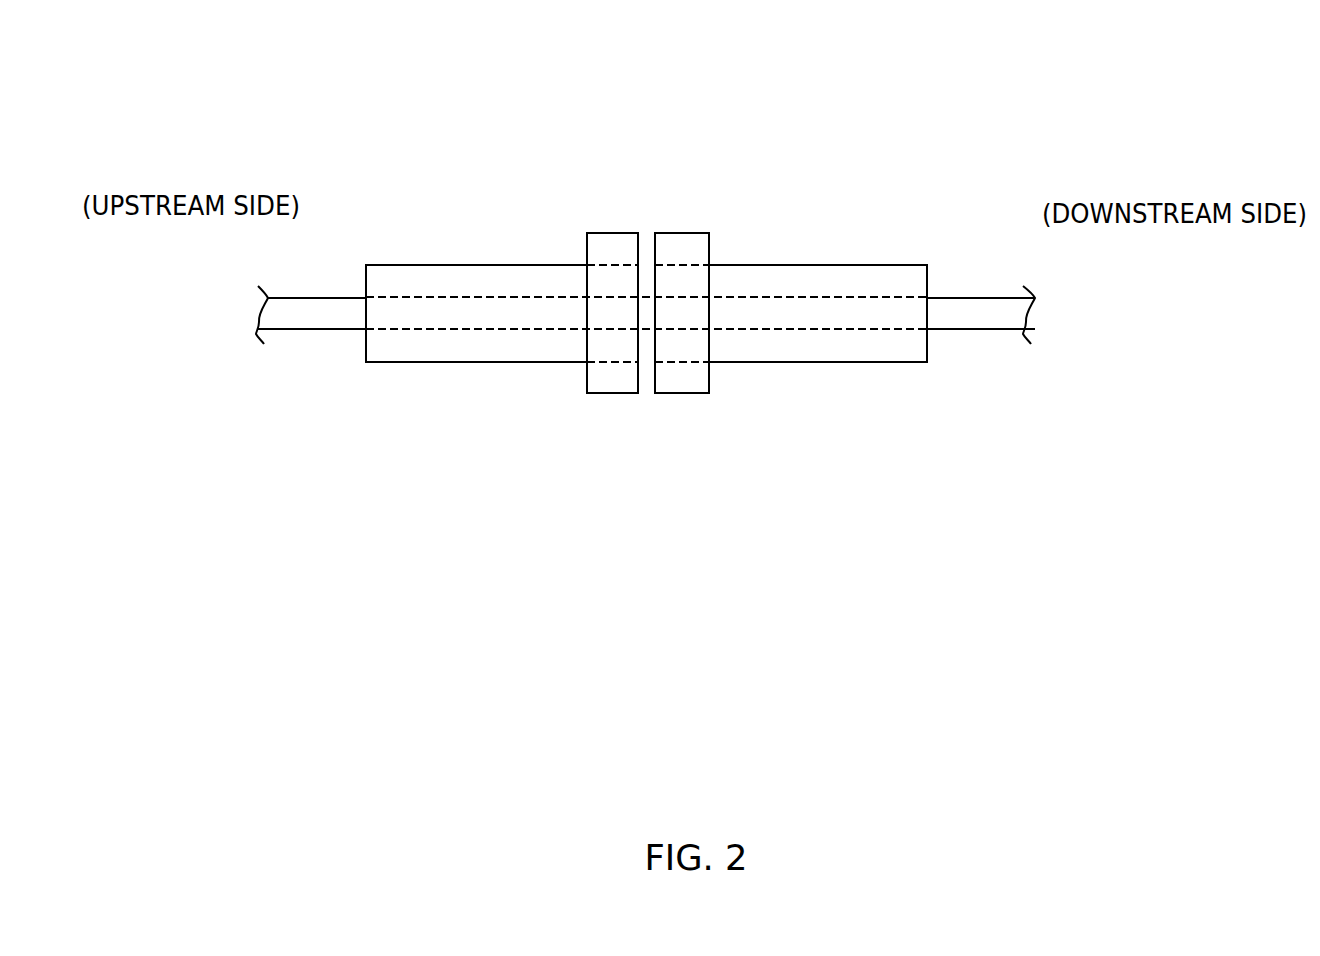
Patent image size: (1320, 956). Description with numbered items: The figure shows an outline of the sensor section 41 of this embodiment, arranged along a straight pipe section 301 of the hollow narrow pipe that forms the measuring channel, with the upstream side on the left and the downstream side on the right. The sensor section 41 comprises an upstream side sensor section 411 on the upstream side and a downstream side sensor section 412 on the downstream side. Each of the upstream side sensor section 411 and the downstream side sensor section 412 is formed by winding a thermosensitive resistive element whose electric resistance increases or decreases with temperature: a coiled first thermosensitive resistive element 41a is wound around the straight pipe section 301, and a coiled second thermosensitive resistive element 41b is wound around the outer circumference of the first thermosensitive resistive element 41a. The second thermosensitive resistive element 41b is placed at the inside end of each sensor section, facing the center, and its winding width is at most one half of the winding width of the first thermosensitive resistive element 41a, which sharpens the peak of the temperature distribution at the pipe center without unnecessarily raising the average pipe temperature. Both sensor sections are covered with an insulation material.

The sensor section 41 is at (620, 266).
The first thermosensitive resistive element 41a is at (646, 343).
The second thermosensitive resistive element 41b is at (613, 233).
The straight pipe section 301 is at (980, 297).
The upstream side sensor section 411 is at (512, 380).
The downstream side sensor section 412 is at (790, 383).